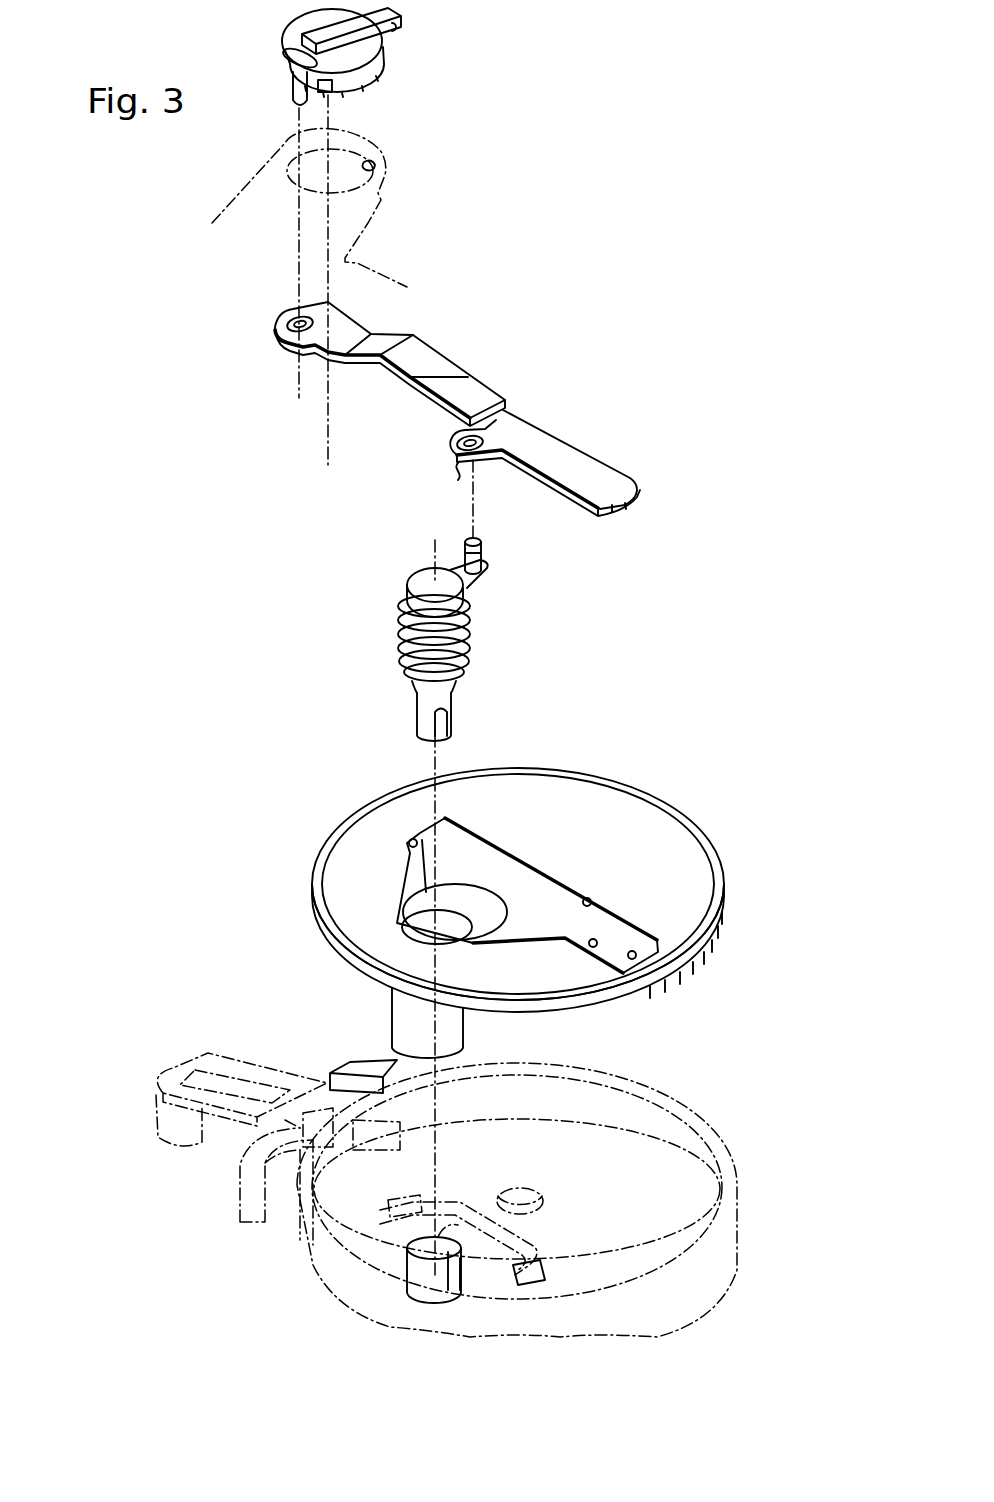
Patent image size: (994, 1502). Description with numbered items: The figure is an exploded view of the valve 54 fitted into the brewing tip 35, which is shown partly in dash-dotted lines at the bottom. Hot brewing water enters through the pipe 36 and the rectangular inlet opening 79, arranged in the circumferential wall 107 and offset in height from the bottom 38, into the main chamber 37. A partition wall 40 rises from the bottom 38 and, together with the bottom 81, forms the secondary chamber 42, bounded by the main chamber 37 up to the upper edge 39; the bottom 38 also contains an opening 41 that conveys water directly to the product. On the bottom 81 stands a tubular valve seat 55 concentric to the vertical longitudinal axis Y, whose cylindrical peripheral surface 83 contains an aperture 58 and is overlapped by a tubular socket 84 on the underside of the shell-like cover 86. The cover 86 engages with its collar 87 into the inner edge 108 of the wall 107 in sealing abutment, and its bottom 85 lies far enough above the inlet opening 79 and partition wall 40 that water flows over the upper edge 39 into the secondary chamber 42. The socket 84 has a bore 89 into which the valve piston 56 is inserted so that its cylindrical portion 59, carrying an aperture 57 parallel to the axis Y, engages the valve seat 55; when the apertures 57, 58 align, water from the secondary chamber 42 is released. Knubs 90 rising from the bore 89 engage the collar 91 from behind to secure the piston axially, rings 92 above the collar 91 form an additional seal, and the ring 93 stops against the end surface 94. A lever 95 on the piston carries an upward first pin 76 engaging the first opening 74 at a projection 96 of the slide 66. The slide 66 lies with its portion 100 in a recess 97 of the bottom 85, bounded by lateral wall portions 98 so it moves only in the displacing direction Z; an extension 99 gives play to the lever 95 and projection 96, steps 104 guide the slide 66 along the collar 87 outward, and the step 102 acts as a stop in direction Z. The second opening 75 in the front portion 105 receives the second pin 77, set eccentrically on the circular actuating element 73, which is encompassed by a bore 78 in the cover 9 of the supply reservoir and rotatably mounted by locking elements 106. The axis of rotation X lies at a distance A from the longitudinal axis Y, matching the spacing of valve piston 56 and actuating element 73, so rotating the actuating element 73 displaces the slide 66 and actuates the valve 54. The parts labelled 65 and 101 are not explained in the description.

The cover of supply reservoir 9 is at (372, 222).
The brewing tip 35 is at (243, 1213).
The pipe 36 is at (168, 1127).
The main chamber 37 is at (432, 1174).
The bottom of main chamber 38 is at (524, 1140).
The upper edge 39 is at (390, 1212).
The partition wall 40 is at (370, 1228).
The opening 41 is at (535, 1205).
The secondary chamber 42 is at (393, 1257).
The valve 54 is at (444, 640).
The valve seat 55 is at (442, 1235).
The valve piston 56 is at (447, 683).
The aperture 57 is at (442, 733).
The aperture 58 is at (462, 1280).
The cylindrically extending portion 59 is at (422, 718).
The tab 65 is at (270, 1137).
The slide 66 is at (444, 399).
The actuating element 73 is at (368, 45).
The first opening 74 is at (456, 437).
The second opening 75 is at (288, 316).
The first pin 76 is at (483, 552).
The second pin 77 is at (290, 92).
The bore 78 is at (375, 167).
The inlet opening 79 is at (378, 1125).
The bottom of secondary chamber 81 is at (492, 1292).
The cylindrical peripheral surface 83 is at (420, 1285).
The tubular socket 84 is at (400, 1015).
The bottom of cover 85 is at (678, 840).
The cover 86 is at (511, 887).
The collar 87 is at (635, 1000).
The bore 89 is at (403, 923).
The knubs 90 is at (453, 927).
The collar 91 is at (410, 670).
The rings 92 is at (472, 655).
The ring 93 is at (470, 618).
The end surface 94 is at (422, 897).
The lever 95 is at (478, 574).
The projection 96 is at (456, 481).
The recess 97 is at (615, 940).
The lateral wall portions 98 is at (412, 838).
The extension 99 is at (530, 927).
The front area of slide 100 is at (568, 457).
The lever plate 101 is at (440, 392).
The step 102 is at (640, 958).
The steps 104 is at (432, 370).
The front portion of slide 105 is at (337, 325).
The locking elements 106 is at (300, 62).
The circumferential wall 107 is at (320, 1283).
The inner edge 108 is at (412, 1098).
The distance A is at (433, 540).
The axis of rotation X is at (333, 100).
The longitudinal axis Y is at (433, 1147).
The displacing direction Z is at (566, 467).